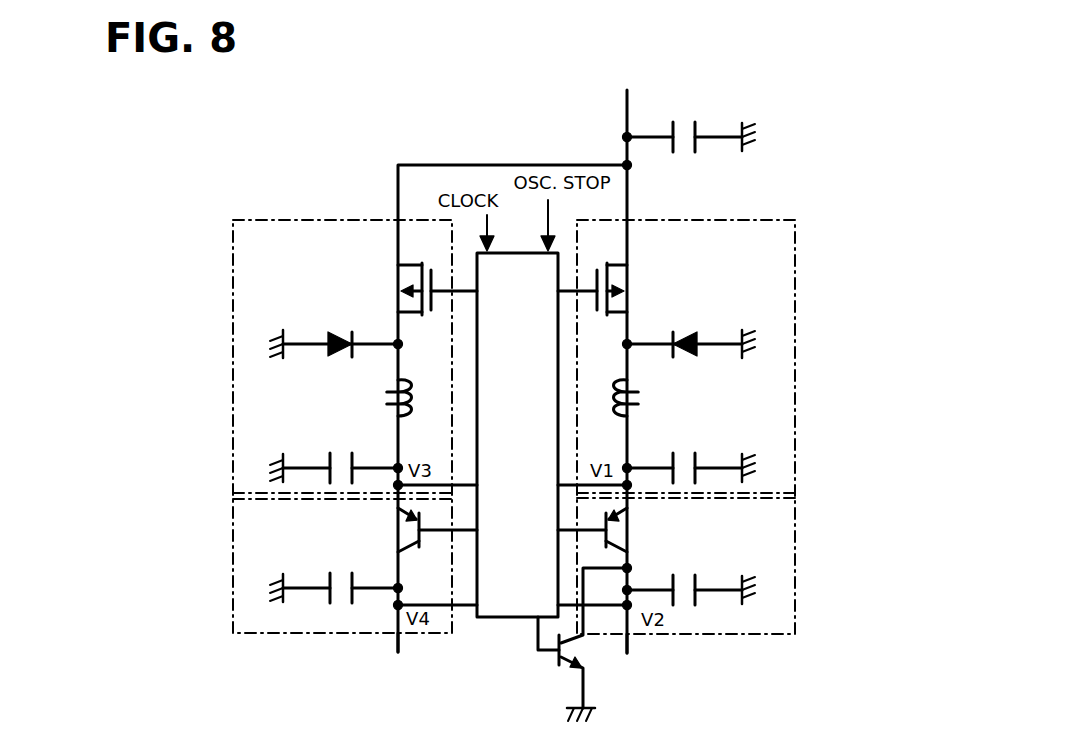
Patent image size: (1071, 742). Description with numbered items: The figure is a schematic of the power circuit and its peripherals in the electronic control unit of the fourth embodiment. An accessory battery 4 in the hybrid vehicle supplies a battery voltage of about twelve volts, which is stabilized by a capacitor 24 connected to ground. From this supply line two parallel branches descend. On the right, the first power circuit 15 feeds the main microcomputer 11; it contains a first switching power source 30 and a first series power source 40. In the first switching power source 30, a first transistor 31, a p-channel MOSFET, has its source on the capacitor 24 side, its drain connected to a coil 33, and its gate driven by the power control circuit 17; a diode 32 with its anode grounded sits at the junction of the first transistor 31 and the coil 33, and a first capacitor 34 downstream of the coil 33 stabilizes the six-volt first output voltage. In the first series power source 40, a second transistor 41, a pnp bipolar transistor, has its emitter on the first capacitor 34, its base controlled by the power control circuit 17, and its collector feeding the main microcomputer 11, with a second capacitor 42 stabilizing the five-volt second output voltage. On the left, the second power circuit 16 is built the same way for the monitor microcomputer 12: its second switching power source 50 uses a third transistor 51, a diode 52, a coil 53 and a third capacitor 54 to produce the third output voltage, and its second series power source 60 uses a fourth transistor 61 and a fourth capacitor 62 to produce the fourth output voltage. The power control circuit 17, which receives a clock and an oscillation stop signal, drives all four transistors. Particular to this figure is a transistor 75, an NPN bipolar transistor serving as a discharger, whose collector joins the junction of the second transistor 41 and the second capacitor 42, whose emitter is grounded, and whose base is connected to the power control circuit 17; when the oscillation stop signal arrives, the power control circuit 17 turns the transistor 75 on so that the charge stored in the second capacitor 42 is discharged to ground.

The accessory battery 4 is at (623, 102).
The main microcomputer 11 is at (642, 668).
The monitor microcomputer 12 is at (393, 668).
The first power circuit 15 is at (800, 216).
The second power circuit 16 is at (233, 213).
The power control circuit 17 is at (500, 618).
The capacitor 24 is at (692, 126).
The first switching power source 30 is at (795, 297).
The first transistor 31 is at (628, 289).
The diode 32 is at (692, 332).
The coil 33 is at (640, 401).
The first capacitor 34 is at (693, 453).
The first series power source 40 is at (795, 543).
The second transistor 41 is at (629, 545).
The second capacitor 42 is at (690, 578).
The second switching power source 50 is at (233, 300).
The third transistor 51 is at (397, 289).
The diode 52 is at (335, 332).
The coil 53 is at (386, 400).
The third capacitor 54 is at (333, 453).
The second series power source 60 is at (233, 545).
The fourth transistor 61 is at (404, 543).
The fourth capacitor 62 is at (333, 573).
The transistor 75 is at (572, 668).